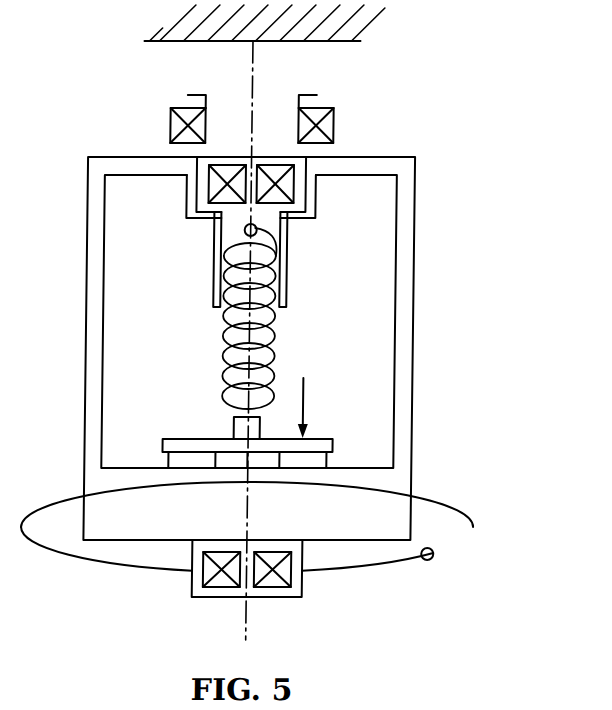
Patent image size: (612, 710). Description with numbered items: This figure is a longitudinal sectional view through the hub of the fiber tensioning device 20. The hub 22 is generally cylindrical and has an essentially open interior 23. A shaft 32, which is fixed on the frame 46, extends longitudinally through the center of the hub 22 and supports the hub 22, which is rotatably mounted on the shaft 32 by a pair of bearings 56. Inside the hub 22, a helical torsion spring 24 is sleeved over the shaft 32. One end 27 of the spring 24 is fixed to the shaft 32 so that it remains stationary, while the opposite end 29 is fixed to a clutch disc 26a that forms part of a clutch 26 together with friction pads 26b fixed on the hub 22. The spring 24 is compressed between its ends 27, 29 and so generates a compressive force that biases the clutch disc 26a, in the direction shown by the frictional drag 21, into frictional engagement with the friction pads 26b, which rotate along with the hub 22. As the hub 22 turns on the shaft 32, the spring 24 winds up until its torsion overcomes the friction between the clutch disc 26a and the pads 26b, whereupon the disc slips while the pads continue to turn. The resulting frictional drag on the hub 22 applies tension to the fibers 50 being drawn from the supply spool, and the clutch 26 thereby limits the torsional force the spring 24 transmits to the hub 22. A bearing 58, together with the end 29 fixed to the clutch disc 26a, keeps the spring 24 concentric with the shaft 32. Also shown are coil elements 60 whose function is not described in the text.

The device 20 is at (257, 322).
The frictional drag 21 is at (311, 402).
The hub 22 is at (409, 261).
The open interior 23 is at (146, 214).
The helical torsion spring 24 is at (283, 337).
The clutch 26 is at (262, 430).
The clutch disc 26a is at (328, 452).
The friction pads 26b is at (330, 463).
The spring end 27 is at (230, 238).
The opposite spring end 29 is at (238, 429).
The shaft 32 is at (254, 96).
The frame 46 is at (192, 22).
The fibers 50 is at (119, 578).
The bearings 56 is at (312, 572).
The bearing 58 is at (172, 128).
The pocket coil 60 is at (296, 184).